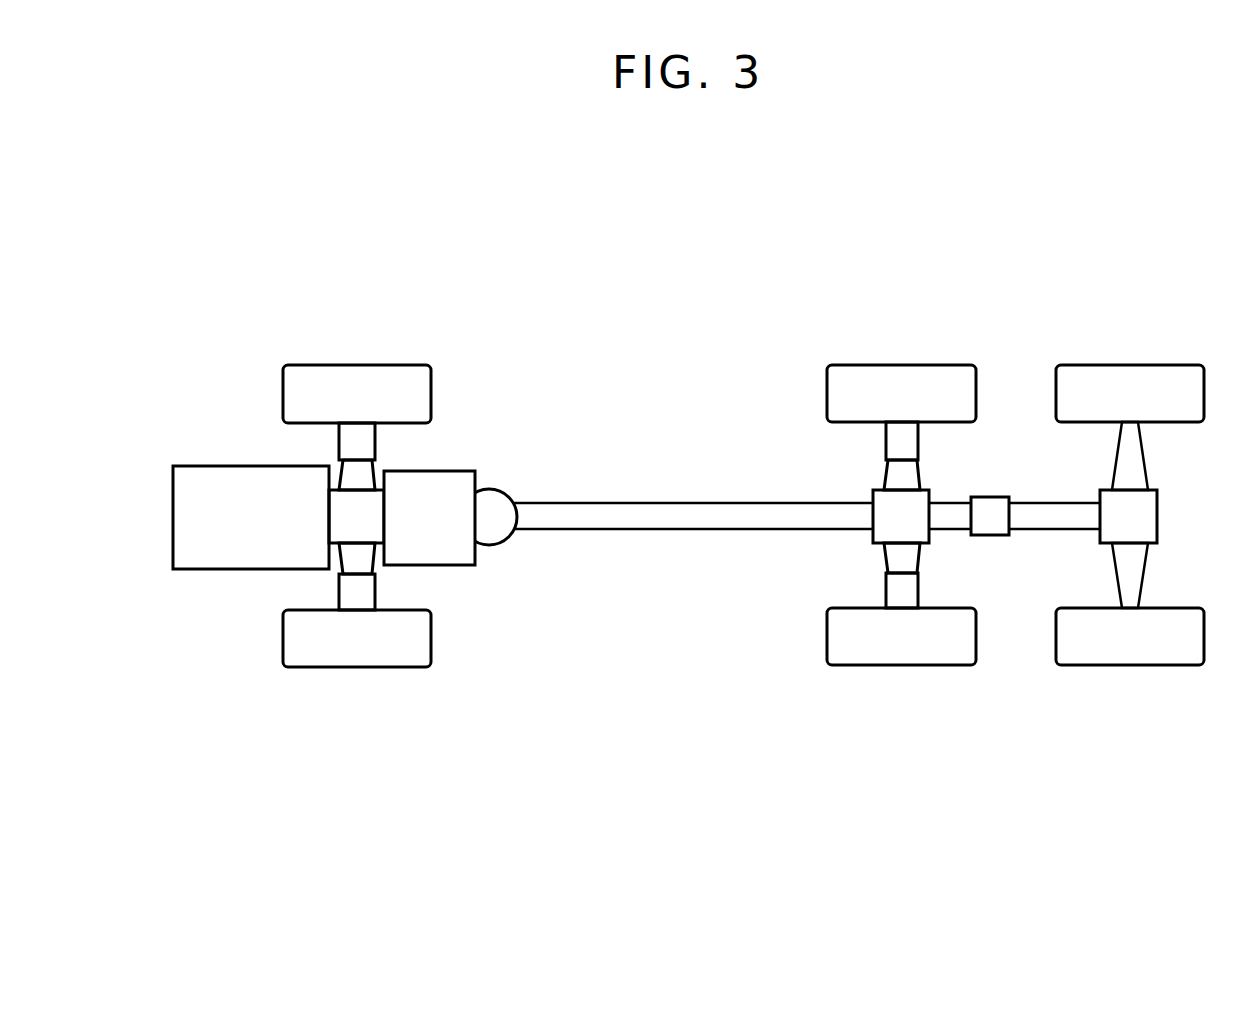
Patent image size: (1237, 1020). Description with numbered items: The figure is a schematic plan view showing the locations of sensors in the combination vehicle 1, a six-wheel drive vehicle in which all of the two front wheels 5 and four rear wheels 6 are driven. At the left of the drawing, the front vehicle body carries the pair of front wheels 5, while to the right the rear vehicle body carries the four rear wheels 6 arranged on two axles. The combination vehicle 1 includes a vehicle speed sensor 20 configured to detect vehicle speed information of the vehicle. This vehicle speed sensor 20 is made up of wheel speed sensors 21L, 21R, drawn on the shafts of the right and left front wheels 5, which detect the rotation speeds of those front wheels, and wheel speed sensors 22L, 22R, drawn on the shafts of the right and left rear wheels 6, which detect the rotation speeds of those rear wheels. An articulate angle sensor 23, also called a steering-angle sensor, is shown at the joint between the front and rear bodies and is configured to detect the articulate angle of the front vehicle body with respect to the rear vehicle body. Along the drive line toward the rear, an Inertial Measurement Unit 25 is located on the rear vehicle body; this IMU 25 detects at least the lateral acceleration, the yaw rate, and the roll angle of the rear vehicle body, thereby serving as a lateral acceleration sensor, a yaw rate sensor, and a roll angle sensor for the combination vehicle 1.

The combination vehicle 1 is at (1196, 290).
The front wheels 5 is at (362, 373).
The rear wheels 6 is at (895, 370).
The vehicle speed sensor 20 is at (367, 443).
The wheel speed sensor 21R is at (348, 445).
The wheel speed sensor 21L is at (343, 589).
The wheel speed sensor 22R is at (893, 437).
The wheel speed sensor 22L is at (893, 589).
The articulate angle sensor 23 is at (497, 533).
The Inertial Measurement Unit 25 is at (990, 505).